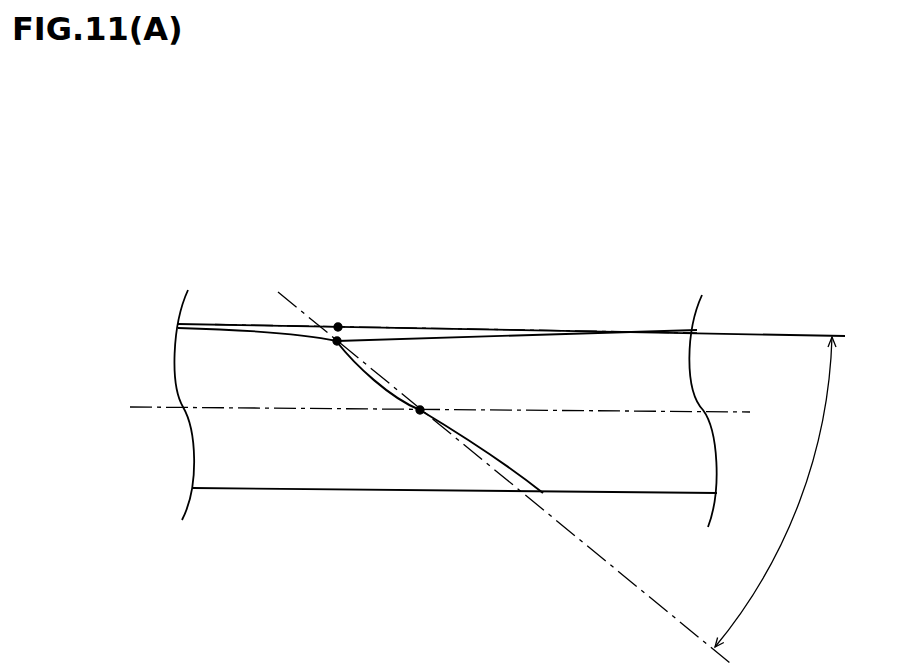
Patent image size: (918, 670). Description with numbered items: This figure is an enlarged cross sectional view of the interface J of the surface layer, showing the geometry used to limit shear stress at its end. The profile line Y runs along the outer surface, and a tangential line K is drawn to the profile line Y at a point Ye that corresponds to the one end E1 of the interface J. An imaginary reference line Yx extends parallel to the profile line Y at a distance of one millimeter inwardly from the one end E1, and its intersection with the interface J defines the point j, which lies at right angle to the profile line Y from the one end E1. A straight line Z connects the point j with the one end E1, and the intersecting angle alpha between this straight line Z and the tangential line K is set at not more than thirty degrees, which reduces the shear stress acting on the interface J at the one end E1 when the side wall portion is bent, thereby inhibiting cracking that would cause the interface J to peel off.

The tangential line K is at (757, 335).
The profile line Y is at (617, 330).
The imaginary reference line Yx is at (723, 408).
The straight line Z is at (592, 552).
The interface J is at (482, 447).
The point j is at (413, 415).
The one end E1 is at (349, 336).
The point Ye is at (341, 317).